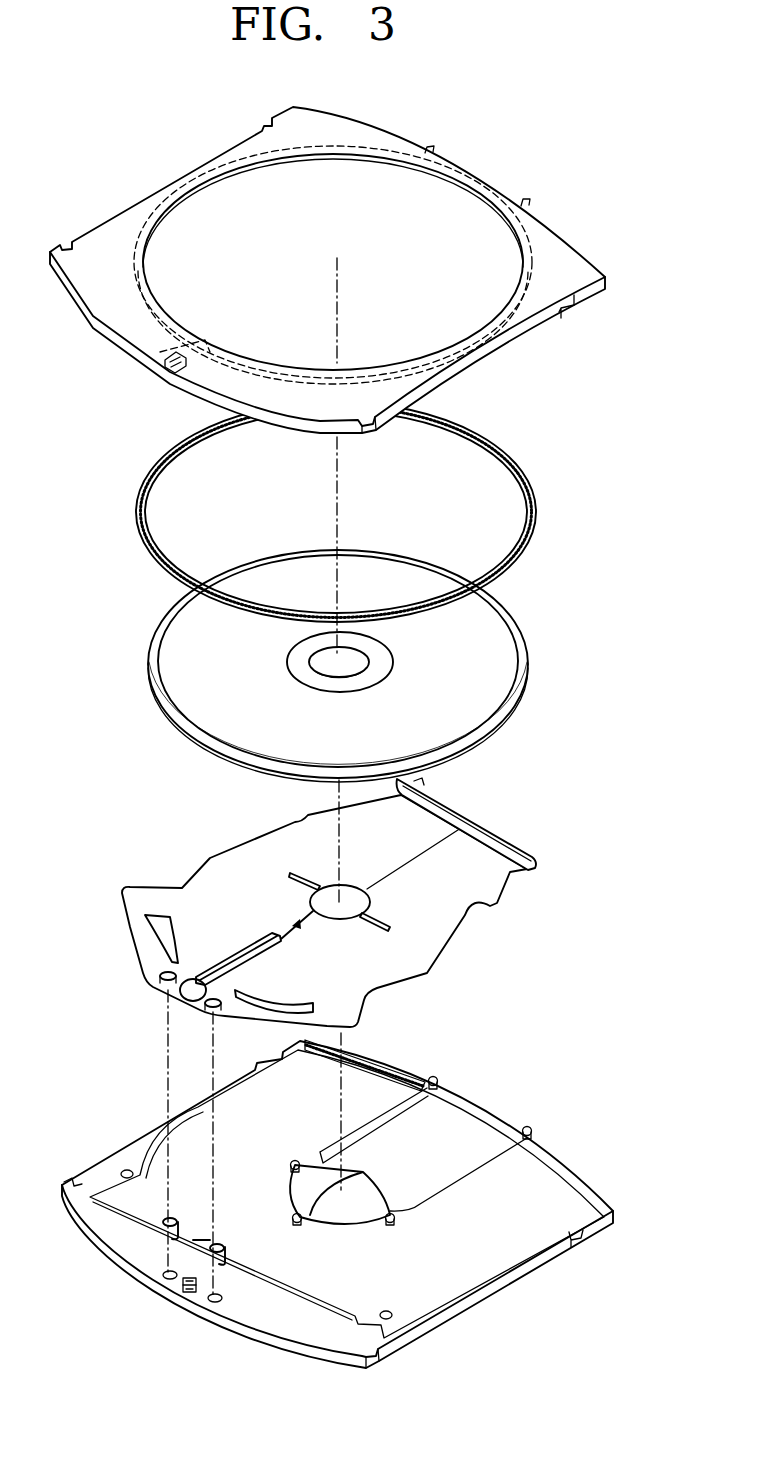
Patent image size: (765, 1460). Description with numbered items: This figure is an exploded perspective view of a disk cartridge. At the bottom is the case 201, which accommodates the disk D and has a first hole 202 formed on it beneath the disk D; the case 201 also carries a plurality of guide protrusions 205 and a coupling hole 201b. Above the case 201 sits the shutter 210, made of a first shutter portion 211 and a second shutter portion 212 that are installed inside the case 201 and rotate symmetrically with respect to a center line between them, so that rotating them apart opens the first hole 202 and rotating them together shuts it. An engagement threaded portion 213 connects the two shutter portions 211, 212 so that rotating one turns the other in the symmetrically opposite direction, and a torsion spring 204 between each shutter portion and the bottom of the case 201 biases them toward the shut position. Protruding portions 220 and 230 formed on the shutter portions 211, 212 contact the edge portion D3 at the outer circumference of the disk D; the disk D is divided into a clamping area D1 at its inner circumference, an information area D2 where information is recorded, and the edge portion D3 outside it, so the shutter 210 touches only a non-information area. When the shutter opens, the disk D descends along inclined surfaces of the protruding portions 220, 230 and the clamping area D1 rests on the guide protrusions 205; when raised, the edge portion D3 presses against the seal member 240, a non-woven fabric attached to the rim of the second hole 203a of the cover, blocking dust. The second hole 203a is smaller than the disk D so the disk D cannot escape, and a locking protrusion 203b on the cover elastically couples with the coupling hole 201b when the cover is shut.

The case 201 is at (331, 1188).
The coupling hole 201b is at (181, 1292).
The first hole 202 is at (413, 1122).
The second hole 203a is at (327, 270).
The locking protrusion 203b is at (173, 370).
The torsion spring 204 is at (152, 1216).
The guide protrusions 205 is at (345, 1185).
The shutter 210 is at (350, 919).
The first shutter portion 211 is at (215, 868).
The second shutter portion 212 is at (462, 907).
The engagement threaded portion 213 is at (197, 993).
The protruding portion 220 is at (470, 799).
The protruding portion 230 is at (156, 906).
The seal member 240 is at (531, 489).
The disk D is at (327, 666).
The clamping area D1 is at (302, 663).
The information area D2 is at (456, 670).
The edge portion D3 is at (522, 657).